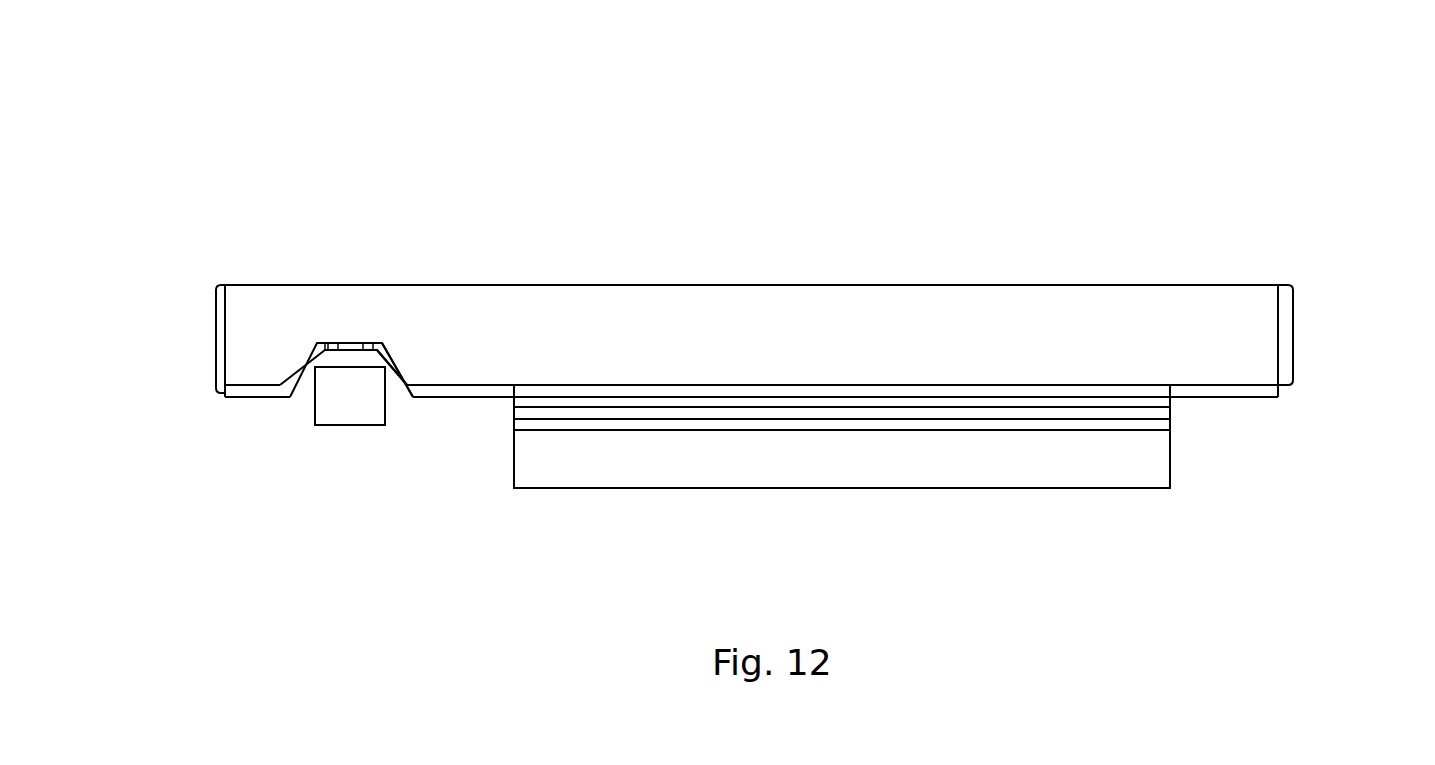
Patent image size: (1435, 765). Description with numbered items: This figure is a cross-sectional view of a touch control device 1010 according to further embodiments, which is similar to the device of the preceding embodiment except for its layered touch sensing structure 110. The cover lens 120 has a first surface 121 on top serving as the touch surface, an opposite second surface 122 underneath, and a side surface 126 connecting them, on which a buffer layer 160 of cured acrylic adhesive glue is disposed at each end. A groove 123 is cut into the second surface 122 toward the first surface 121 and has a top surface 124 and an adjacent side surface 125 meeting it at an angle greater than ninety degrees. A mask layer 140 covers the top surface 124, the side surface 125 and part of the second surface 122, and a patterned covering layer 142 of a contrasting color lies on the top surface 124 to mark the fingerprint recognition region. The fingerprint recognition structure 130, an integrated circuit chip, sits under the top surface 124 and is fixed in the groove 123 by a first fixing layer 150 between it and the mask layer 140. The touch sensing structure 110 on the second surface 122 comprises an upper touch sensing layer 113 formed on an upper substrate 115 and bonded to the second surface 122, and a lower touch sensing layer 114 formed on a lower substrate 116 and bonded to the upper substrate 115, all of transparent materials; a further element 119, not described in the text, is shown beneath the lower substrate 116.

The touch control device 1010 is at (662, 147).
The cover lens 120 is at (480, 144).
The side surface 126 is at (226, 300).
The second surface 122 is at (248, 385).
The first surface 121 is at (350, 285).
The groove 123 is at (513, 202).
The top surface 124 is at (352, 343).
The side surface 125 is at (398, 364).
The patterned covering layer 142 is at (330, 347).
The fingerprint recognition structure 130 is at (352, 407).
The first fixing layer 150 is at (357, 358).
The mask layer 140 is at (457, 398).
The buffer layer 160 is at (215, 327).
The touch sensing structure 110 is at (878, 548).
The upper touch sensing layer 113 is at (701, 390).
The upper substrate 115 is at (750, 400).
The lower touch sensing layer 114 is at (795, 410).
The lower substrate 116 is at (850, 425).
The base layer 119 is at (928, 458).